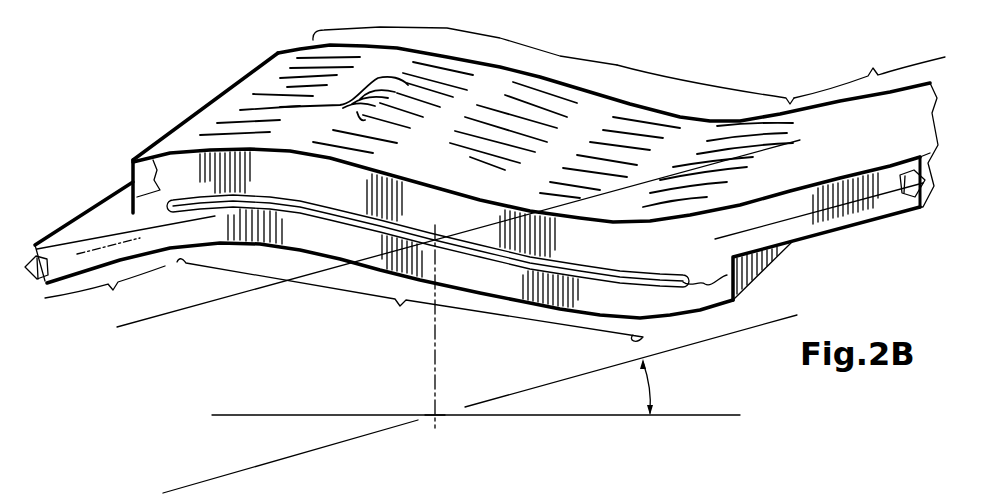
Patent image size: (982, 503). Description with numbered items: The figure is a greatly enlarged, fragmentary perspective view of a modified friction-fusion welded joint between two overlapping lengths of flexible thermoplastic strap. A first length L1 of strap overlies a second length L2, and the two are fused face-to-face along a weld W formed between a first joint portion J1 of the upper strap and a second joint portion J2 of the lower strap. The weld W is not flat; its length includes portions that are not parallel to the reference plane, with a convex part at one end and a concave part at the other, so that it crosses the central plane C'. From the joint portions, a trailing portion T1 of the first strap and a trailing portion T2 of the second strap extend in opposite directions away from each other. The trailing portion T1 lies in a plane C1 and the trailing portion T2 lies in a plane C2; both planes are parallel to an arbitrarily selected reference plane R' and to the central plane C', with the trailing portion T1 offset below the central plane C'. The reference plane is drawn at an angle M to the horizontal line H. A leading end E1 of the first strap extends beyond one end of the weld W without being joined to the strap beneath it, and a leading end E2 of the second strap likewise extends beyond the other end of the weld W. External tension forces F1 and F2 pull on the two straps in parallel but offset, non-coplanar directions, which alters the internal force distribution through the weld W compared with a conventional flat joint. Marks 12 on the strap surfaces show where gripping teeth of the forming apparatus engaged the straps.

The marks 12 is at (270, 107).
The first length of thermoplastic strap L1 is at (248, 66).
The second length of thermoplastic strap L2 is at (112, 180).
The leading end E1 is at (153, 160).
The weld W is at (267, 193).
The plane C2 is at (77, 254).
The first joint portion J1 is at (617, 65).
The trailing portion T1 is at (857, 75).
The plane C1 is at (793, 220).
The tension force F1 is at (906, 198).
The leading end E2 is at (738, 277).
The tension force F2 is at (28, 279).
The trailing portion T2 is at (105, 318).
The central plane C' is at (458, 253).
The second joint portion J2 is at (402, 308).
The horizontal line H is at (282, 413).
The angle M is at (653, 383).
The reference plane R' is at (476, 404).